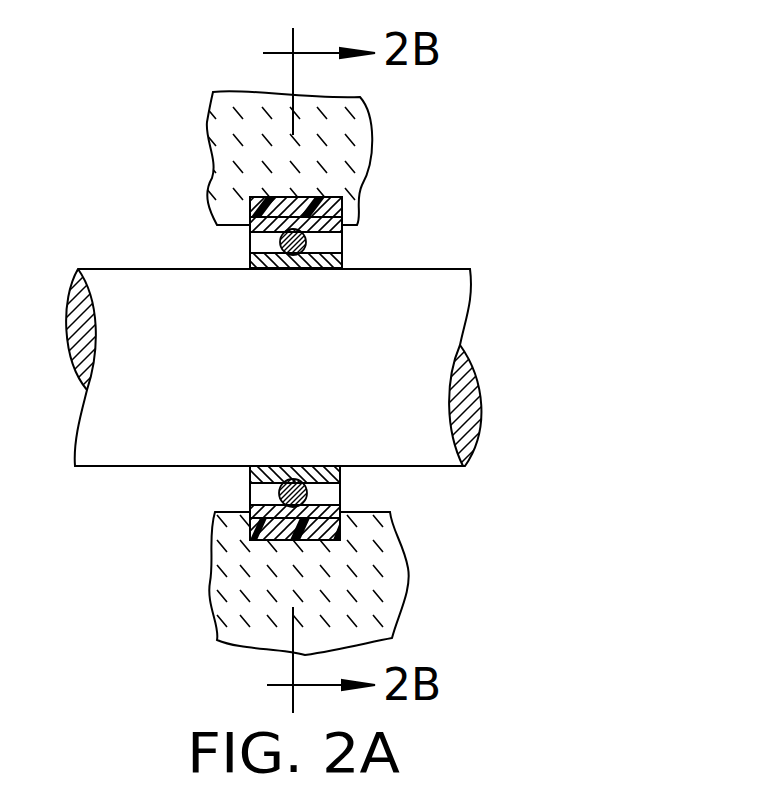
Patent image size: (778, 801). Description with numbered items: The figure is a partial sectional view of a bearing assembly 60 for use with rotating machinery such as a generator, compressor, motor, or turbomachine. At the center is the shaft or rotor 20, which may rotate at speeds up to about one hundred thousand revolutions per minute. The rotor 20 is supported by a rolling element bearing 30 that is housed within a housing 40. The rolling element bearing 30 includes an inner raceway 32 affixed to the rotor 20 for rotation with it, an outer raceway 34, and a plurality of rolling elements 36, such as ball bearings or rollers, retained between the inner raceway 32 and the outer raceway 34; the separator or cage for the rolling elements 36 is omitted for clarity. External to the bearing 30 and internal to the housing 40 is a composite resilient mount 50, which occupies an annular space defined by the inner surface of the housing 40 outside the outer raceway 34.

The shaft or rotor 20 is at (284, 371).
The rolling element bearing 30 is at (320, 209).
The inner raceway 32 is at (250, 474).
The outer raceway 34 is at (250, 233).
The rolling elements 36 is at (309, 493).
The housing 40 is at (242, 593).
The composite resilient mount 50 is at (250, 216).
The bearing assembly 60 is at (133, 95).